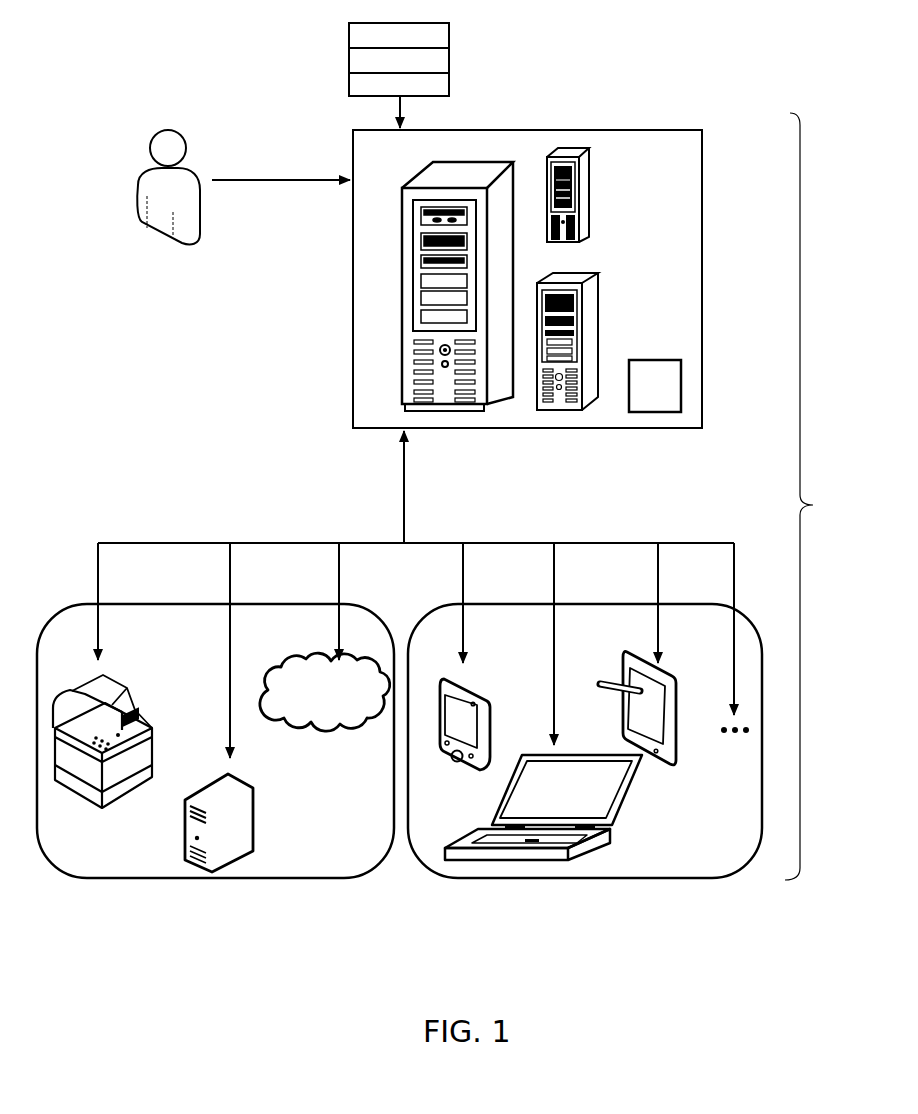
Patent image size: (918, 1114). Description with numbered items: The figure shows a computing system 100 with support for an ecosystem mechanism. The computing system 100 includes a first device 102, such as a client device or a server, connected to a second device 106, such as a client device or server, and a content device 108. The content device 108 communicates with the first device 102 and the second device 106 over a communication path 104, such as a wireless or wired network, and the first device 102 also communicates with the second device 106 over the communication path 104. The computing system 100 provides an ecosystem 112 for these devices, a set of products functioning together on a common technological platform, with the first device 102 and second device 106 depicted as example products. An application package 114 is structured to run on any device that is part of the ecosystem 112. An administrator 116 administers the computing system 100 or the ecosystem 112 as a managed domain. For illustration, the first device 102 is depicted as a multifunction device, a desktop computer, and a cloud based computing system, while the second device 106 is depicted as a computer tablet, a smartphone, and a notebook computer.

The computing system 100 is at (158, 66).
The first device 102 is at (332, 857).
The communication path 104 is at (321, 543).
The second device 106 is at (663, 857).
The content device 108 is at (530, 138).
The ecosystem 112 is at (820, 496).
The application package 114 is at (420, 47).
The administrator 116 is at (155, 202).